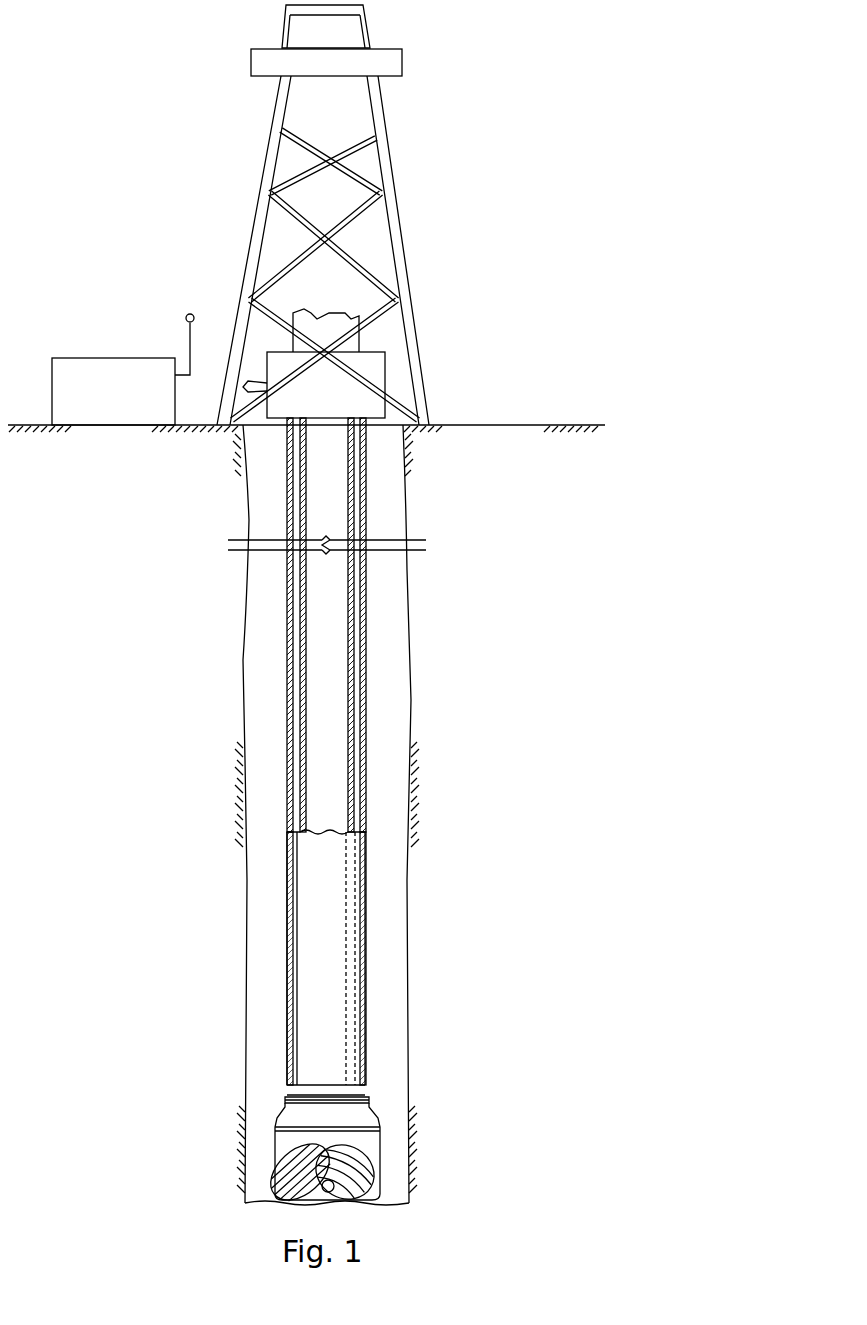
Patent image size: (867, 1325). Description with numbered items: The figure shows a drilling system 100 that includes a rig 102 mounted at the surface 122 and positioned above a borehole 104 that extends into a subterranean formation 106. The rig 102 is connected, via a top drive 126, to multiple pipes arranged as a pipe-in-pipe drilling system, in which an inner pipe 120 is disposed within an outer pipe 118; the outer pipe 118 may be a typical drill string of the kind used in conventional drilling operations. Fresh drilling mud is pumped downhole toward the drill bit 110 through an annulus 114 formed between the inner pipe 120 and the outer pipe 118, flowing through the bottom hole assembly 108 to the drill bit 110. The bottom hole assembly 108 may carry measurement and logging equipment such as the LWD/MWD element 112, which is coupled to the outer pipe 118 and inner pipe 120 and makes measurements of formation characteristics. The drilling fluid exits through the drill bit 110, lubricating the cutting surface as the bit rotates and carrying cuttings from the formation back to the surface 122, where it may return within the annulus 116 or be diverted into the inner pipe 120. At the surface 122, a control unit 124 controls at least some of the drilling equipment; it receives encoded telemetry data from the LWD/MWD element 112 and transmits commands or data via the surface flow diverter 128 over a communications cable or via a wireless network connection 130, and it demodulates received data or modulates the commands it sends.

The drilling system 100 is at (622, 159).
The rig 102 is at (393, 160).
The borehole 104 is at (413, 707).
The subterranean formation 106 is at (612, 661).
The bottom hole assembly 108 is at (428, 1073).
The drill bit 110 is at (273, 1143).
The LWD/MWD element 112 is at (287, 1030).
The annulus 114 is at (357, 729).
The annulus 116 is at (388, 615).
The outer pipe 118 is at (287, 796).
The inner pipe 120 is at (297, 722).
The surface 122 is at (563, 425).
The control unit 124 is at (133, 403).
The top drive 126 is at (360, 342).
The surface flow diverter 128 is at (342, 403).
The wireless network connection 130 is at (182, 305).